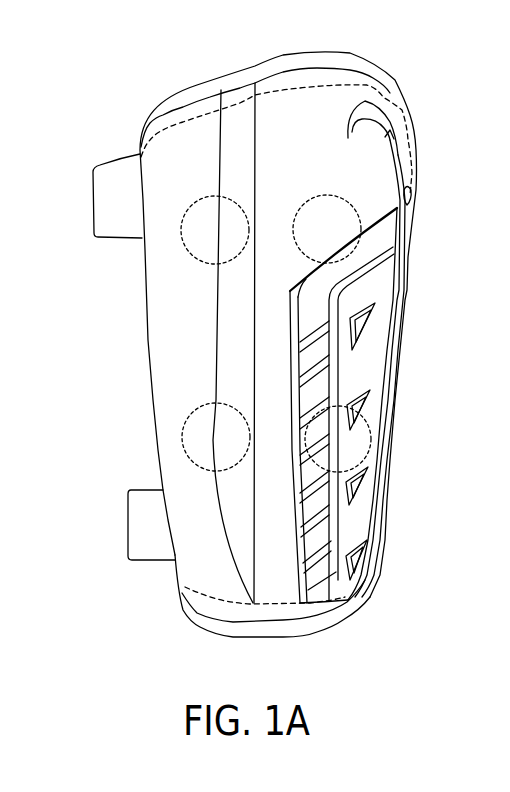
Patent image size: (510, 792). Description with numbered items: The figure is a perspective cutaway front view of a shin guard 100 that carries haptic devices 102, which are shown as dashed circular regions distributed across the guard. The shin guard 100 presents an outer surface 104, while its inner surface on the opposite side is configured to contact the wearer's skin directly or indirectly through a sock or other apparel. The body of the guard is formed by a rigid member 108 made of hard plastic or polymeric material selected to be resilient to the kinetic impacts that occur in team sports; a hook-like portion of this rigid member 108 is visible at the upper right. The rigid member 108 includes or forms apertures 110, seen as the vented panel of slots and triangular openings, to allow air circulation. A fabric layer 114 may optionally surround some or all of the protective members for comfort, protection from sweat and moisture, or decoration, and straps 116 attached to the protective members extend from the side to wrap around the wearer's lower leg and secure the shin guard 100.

The shin guard 100 is at (208, 122).
The haptic devices 102 is at (212, 205).
The outer surface 104 is at (157, 348).
The rigid member 108 is at (367, 100).
The apertures 110 is at (333, 528).
The fabric layer 114 is at (341, 619).
The straps 116 is at (105, 196).